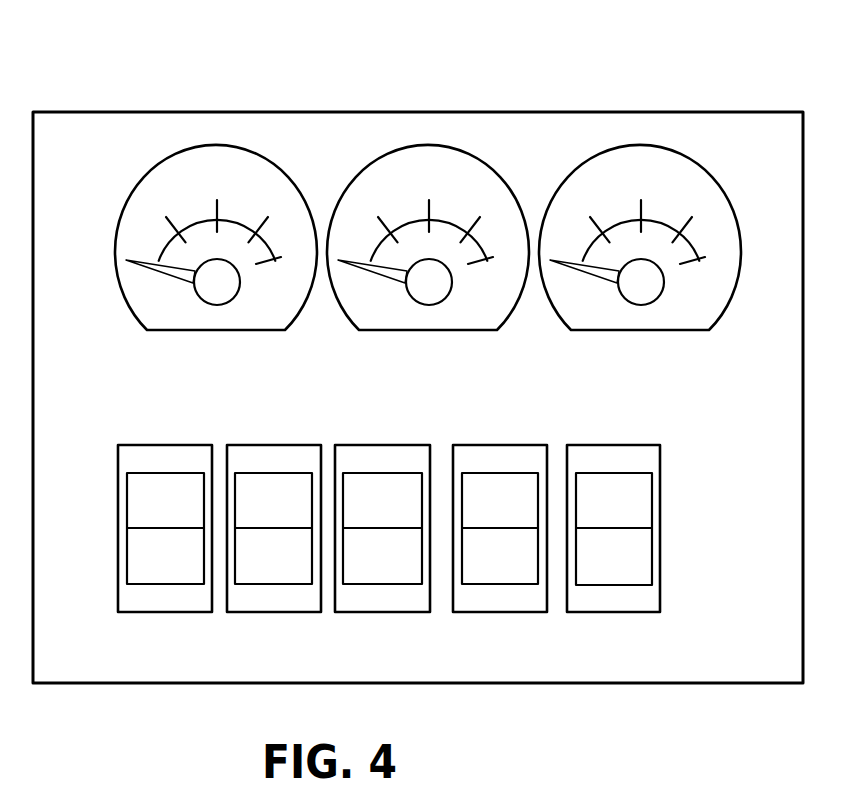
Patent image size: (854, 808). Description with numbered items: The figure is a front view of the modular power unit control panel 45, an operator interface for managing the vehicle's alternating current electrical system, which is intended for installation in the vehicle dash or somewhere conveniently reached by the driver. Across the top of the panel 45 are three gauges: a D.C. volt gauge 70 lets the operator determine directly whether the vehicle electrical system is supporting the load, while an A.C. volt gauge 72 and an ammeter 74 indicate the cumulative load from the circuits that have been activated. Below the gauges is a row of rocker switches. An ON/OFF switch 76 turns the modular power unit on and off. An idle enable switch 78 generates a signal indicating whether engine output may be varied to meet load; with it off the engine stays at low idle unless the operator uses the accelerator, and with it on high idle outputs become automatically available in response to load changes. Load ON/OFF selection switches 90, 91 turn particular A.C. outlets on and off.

The modular power unit control panel 45 is at (710, 112).
The D.C. volt gauge 70 is at (135, 183).
The A.C. volt gauge 72 is at (360, 170).
The ammeter 74 is at (572, 168).
The ON/OFF switch 76 is at (150, 445).
The idle enable switch 78 is at (269, 445).
The load ON/OFF selection switch 90 is at (385, 445).
The load ON/OFF selection switch 91 is at (517, 445).